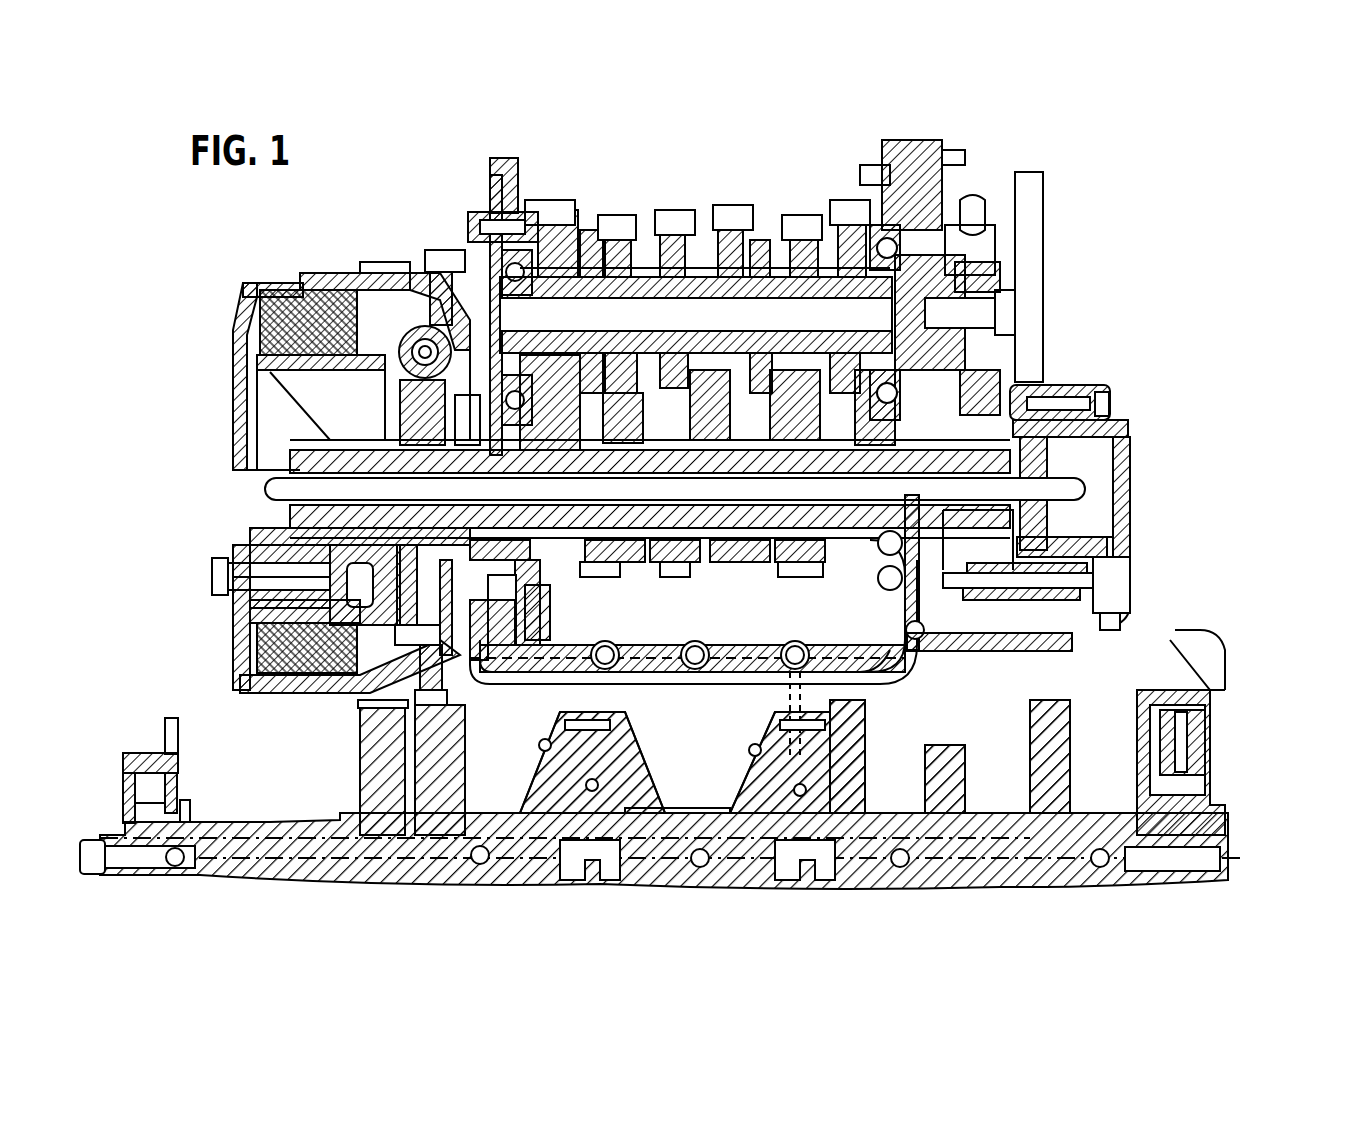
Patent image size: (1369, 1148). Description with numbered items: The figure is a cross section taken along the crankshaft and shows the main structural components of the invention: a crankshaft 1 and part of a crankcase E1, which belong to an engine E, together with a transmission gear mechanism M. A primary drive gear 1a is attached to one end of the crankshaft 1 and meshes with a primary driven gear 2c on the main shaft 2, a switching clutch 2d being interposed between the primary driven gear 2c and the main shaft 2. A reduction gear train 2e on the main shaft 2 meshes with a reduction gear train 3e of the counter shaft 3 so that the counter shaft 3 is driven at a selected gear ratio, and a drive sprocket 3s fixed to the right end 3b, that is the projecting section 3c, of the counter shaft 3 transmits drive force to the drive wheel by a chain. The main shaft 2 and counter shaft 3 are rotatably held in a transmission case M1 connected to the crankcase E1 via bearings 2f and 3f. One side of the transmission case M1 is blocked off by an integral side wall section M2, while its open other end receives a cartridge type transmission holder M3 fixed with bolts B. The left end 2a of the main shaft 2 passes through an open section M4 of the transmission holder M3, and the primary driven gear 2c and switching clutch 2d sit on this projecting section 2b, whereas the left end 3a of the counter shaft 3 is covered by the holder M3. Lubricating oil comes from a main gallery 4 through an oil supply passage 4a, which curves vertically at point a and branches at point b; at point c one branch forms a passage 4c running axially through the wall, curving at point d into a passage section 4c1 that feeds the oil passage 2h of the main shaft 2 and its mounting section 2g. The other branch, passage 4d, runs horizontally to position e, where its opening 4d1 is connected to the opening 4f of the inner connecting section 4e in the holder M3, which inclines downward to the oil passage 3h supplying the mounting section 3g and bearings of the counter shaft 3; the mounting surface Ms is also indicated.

The crankshaft 1 is at (320, 820).
The primary drive gear 1a is at (400, 752).
The main shaft 2 is at (672, 525).
The one axial end of main shaft 2a is at (240, 612).
The projecting section of main shaft 2b is at (222, 575).
The primary driven gear 2c is at (358, 718).
The switching clutch 2d is at (255, 668).
The reduction gear train of main shaft 2e is at (731, 580).
The bearing of main shaft 2f is at (580, 280).
The mounting section for reduction gear train 2g is at (652, 545).
The oil passage of main shaft 2h is at (748, 545).
The counter shaft 3 is at (648, 250).
The one axial end of counter shaft 3a is at (540, 320).
The other axial end of counter shaft 3b is at (990, 258).
The projecting section of counter shaft 3c is at (1000, 285).
The reduction gear train of counter shaft 3e is at (748, 188).
The bearing of counter shaft 3f is at (538, 290).
The mounting section for reduction gear train 3g is at (700, 280).
The oil passage of counter shaft 3h is at (665, 310).
The drive sprocket 3s is at (975, 210).
The main gallery 4 is at (725, 870).
The oil supply passage 4a is at (808, 757).
The oil supply passage 4c is at (825, 650).
The passage section 4c1 is at (885, 608).
The oil supply passage 4d is at (565, 645).
The passage opening 4d1 is at (545, 570).
The inner connecting section 4e is at (495, 620).
The passage opening 4f is at (512, 668).
The point of vertical curve a is at (710, 644).
The branch point b is at (795, 642).
The point forming passage 4c c is at (820, 642).
The point of curve toward main shaft d is at (885, 650).
The position adjacent to counter shaft e is at (520, 655).
The bolts B is at (475, 232).
The engine E is at (1284, 748).
The crankcase E1 is at (1050, 632).
The transmission gear mechanism M is at (848, 155).
The transmission case M1 is at (728, 672).
The side wall section M2 is at (980, 410).
The transmission holder M3 is at (495, 180).
The open section M4 is at (478, 430).
The motor mounting surface Ms is at (677, 754).